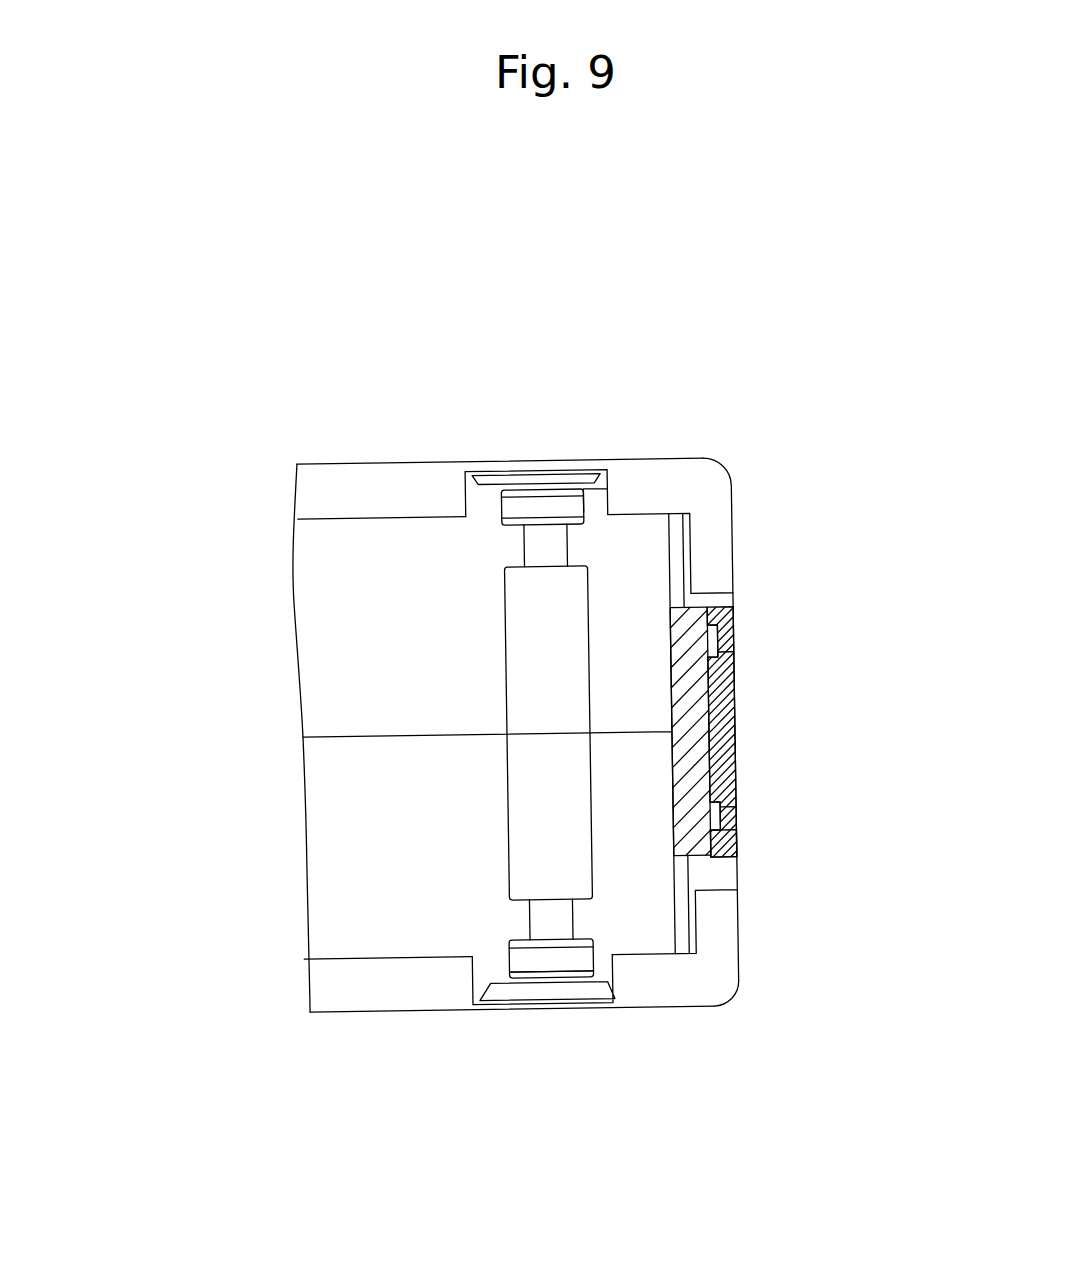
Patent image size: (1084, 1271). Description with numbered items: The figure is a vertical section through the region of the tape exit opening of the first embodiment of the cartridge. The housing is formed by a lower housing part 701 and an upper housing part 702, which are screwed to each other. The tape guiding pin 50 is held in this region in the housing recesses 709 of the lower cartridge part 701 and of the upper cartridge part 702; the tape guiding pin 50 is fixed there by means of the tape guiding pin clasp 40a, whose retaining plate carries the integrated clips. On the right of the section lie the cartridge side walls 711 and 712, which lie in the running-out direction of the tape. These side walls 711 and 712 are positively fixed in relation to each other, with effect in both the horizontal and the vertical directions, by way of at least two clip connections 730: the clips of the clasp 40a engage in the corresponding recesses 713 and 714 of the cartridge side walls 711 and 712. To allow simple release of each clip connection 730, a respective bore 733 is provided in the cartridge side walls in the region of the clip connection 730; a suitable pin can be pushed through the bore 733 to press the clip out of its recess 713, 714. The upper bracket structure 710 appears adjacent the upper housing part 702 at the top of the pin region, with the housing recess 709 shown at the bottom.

The upper housing part 702 is at (386, 497).
The upper bracket 710 is at (483, 500).
The tape guiding pin 50 is at (547, 620).
The tape guiding pin clasp 40a is at (697, 705).
The cartridge side wall 712 is at (710, 560).
The recess 714 is at (717, 627).
The clip connection 730 is at (737, 659).
The bore 733 is at (735, 812).
The recess 713 is at (728, 838).
The cartridge side wall 711 is at (715, 910).
The lower housing part 701 is at (396, 980).
The housing recess 709 is at (501, 967).